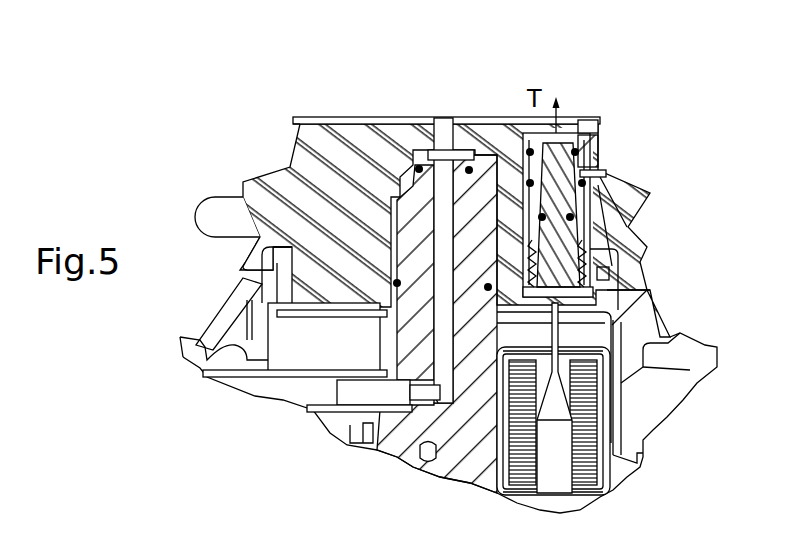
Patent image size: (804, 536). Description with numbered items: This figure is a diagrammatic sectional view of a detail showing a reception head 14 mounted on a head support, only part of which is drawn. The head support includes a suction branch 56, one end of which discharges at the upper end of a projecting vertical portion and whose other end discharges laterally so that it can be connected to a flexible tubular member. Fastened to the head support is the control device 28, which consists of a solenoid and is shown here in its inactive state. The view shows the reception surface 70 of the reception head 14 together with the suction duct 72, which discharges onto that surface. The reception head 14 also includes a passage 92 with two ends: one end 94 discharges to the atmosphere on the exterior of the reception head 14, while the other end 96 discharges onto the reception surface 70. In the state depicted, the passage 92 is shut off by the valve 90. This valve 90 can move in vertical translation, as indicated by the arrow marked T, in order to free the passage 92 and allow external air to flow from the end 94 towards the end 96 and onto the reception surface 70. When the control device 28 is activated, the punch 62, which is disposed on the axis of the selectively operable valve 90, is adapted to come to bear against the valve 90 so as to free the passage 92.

The reception head 14 is at (302, 158).
The control device 28 is at (618, 425).
The suction branch 56 is at (445, 347).
The punch 62 is at (600, 340).
The reception surface 70 is at (351, 112).
The suction duct 72 is at (445, 118).
The valve 90 is at (633, 265).
The passage 92 is at (597, 156).
The end 94 is at (616, 175).
The end 96 is at (585, 117).